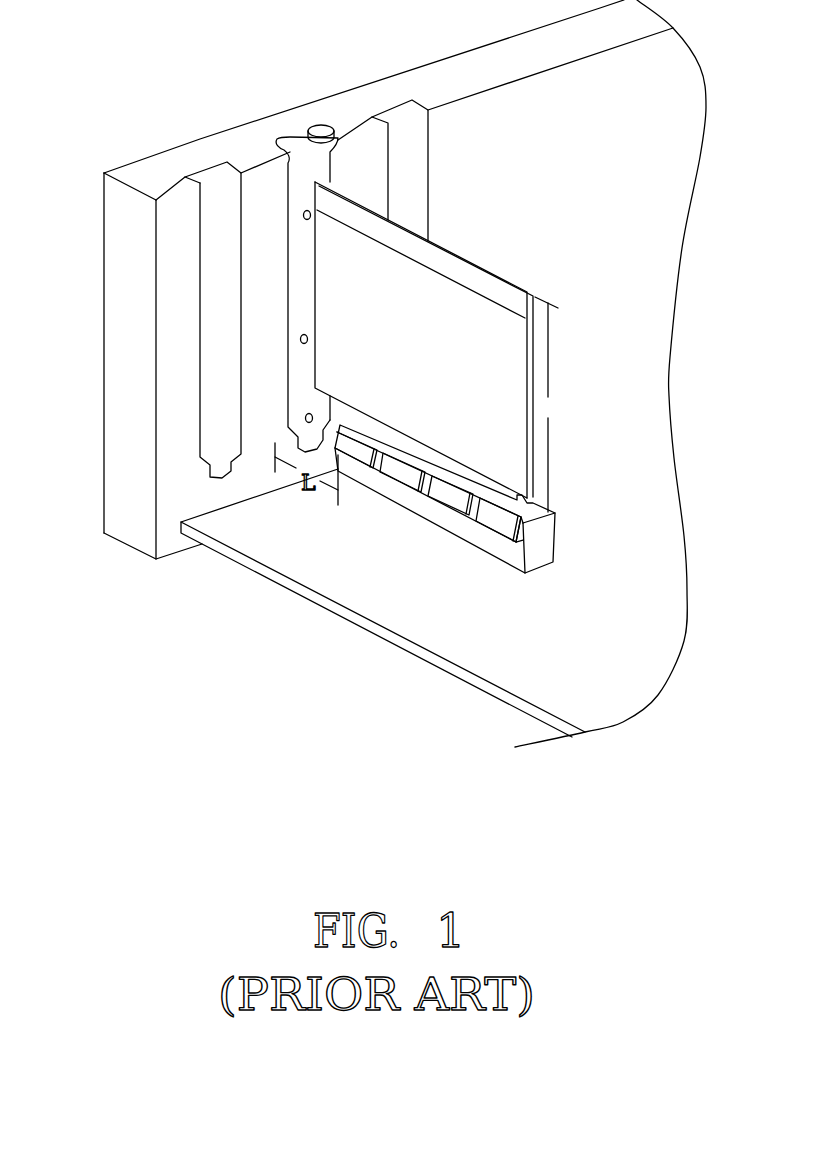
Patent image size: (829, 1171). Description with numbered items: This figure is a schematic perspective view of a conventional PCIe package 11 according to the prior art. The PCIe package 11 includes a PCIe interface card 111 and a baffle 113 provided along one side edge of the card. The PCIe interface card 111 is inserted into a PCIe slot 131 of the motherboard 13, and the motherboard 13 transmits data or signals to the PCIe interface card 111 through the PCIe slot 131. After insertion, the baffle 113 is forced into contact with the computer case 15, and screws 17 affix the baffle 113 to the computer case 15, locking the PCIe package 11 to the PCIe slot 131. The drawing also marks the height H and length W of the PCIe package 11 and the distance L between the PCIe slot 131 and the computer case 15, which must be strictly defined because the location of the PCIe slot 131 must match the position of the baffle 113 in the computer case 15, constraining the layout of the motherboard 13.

The computer case 15 is at (206, 126).
The baffle 113 is at (287, 137).
The screws 17 is at (320, 124).
The PCIe package 11 is at (464, 241).
The PCIe interface card 111 is at (432, 377).
The PCIe slot 131 is at (412, 507).
The motherboard 13 is at (318, 598).